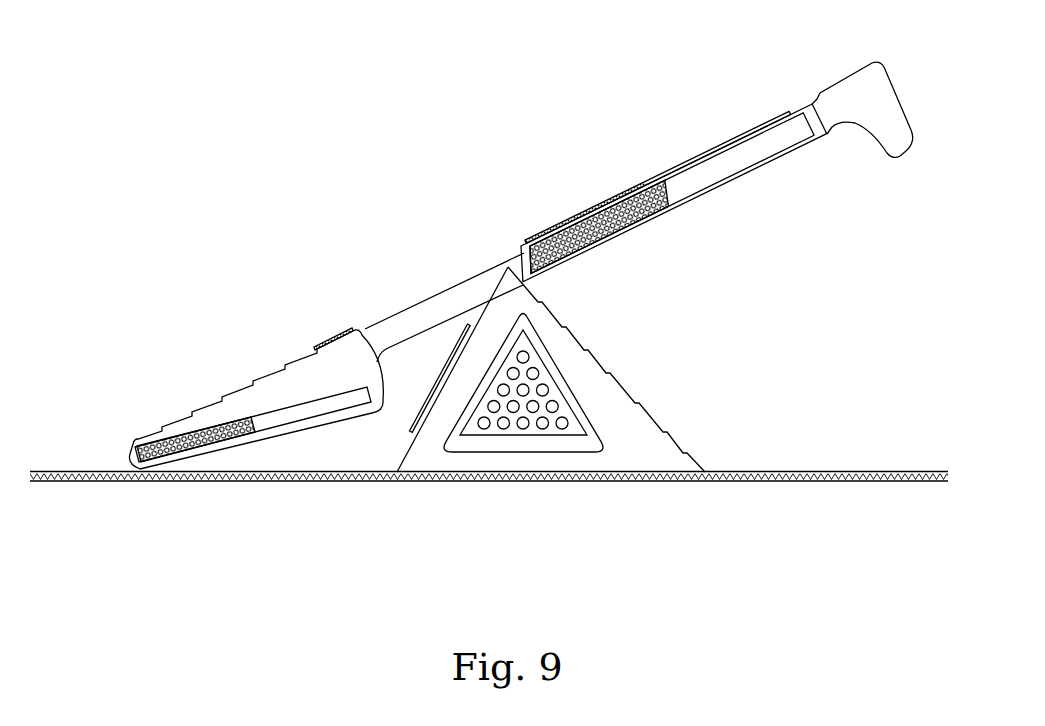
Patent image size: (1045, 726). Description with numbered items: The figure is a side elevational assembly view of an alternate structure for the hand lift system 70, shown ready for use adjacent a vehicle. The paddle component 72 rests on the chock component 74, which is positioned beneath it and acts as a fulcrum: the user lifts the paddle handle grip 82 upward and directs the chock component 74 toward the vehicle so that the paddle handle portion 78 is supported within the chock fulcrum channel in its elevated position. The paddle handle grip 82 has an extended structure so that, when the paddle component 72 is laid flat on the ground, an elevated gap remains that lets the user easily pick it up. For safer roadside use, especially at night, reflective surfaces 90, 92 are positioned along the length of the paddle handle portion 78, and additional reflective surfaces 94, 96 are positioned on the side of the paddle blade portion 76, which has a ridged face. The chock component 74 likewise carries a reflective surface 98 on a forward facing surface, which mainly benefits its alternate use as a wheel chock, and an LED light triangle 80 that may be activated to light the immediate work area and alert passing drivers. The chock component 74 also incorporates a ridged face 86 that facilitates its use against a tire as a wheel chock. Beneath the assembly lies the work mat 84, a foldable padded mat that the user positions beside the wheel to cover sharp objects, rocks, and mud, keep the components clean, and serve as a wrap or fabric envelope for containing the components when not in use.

The hand lift system 70 is at (504, 244).
The paddle component 72 is at (695, 193).
The chock component 74 is at (567, 400).
The paddle blade portion 76 is at (169, 424).
The paddle handle portion 78 is at (426, 297).
The LED light triangle 80 is at (522, 452).
The paddle handle grip 82 is at (845, 76).
The work mat 84 is at (254, 489).
The ridged face 86 is at (646, 407).
The reflective surface 90 is at (684, 192).
The reflective surface 92 is at (658, 175).
The reflective surface 94 is at (272, 412).
The reflective surface 96 is at (328, 338).
The reflective surface 98 is at (420, 413).